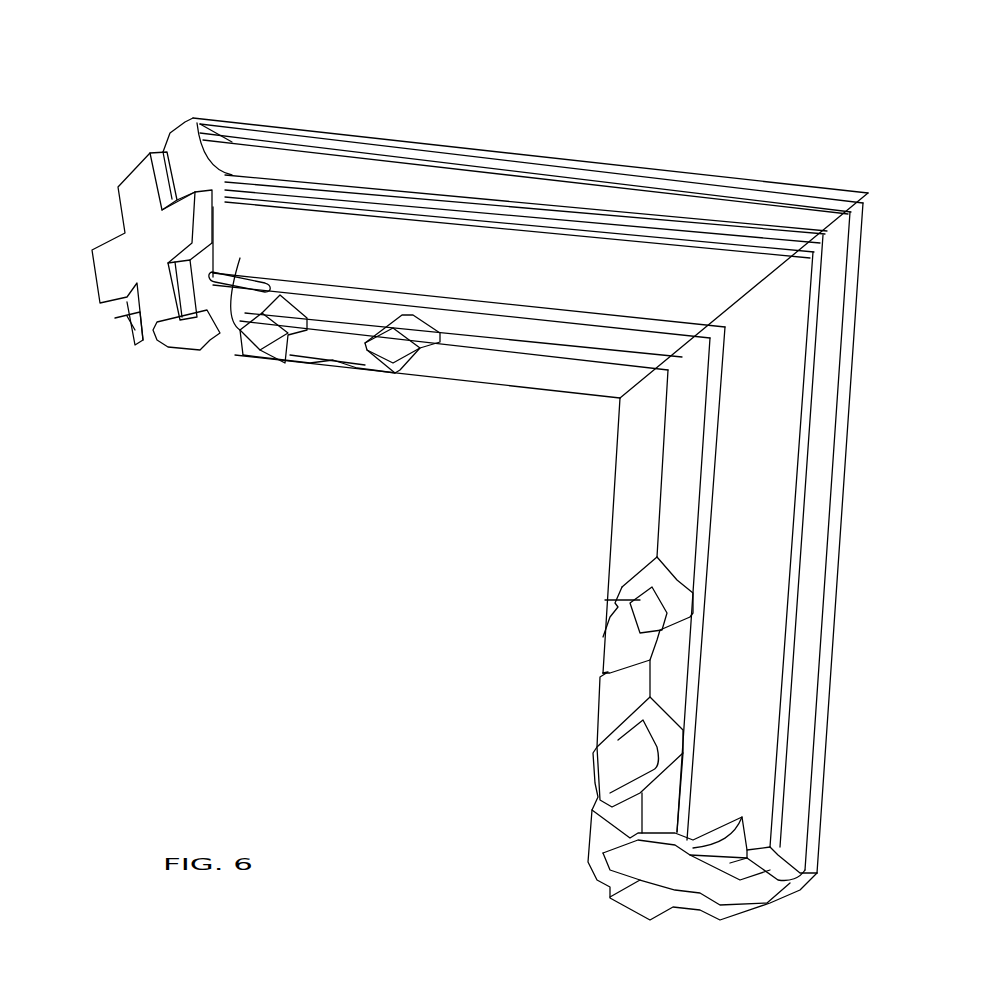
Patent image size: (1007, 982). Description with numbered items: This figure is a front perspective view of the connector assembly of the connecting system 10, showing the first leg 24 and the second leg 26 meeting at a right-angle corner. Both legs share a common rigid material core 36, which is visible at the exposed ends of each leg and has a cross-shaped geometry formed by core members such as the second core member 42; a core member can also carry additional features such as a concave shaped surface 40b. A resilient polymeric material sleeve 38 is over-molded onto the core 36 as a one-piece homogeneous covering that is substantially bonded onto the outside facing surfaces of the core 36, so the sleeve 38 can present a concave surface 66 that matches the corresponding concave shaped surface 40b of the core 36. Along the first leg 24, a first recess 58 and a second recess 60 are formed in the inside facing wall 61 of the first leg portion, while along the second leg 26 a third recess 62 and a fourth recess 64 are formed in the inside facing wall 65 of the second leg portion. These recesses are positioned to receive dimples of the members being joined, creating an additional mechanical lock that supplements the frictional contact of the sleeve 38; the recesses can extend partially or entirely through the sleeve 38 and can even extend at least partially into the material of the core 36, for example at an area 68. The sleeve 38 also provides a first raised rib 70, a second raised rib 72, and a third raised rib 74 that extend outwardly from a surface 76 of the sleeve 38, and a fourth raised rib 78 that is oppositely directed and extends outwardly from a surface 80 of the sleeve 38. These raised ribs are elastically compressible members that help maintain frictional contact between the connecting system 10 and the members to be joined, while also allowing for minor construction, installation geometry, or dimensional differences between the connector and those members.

The connecting system 10 is at (700, 142).
The first leg 24 is at (563, 188).
The second leg 26 is at (742, 478).
The rigid material core 36 is at (108, 262).
The resilient polymeric material sleeve 38 is at (170, 133).
The concave shaped surface 40b is at (197, 237).
The second core member 42 is at (160, 325).
The first recess 58 is at (278, 338).
The second recess 60 is at (400, 370).
The inside facing wall 61 is at (307, 368).
The third recess 62 is at (607, 627).
The fourth recess 64 is at (600, 767).
The inside facing wall 65 is at (617, 580).
The concave surface 66 is at (240, 323).
The area 68 is at (267, 333).
The first raised rib 70 is at (447, 157).
The second raised rib 72 is at (340, 198).
The third raised rib 74 is at (470, 303).
The surface 76 is at (232, 147).
The fourth raised rib 78 is at (118, 328).
The surface 80 is at (127, 316).